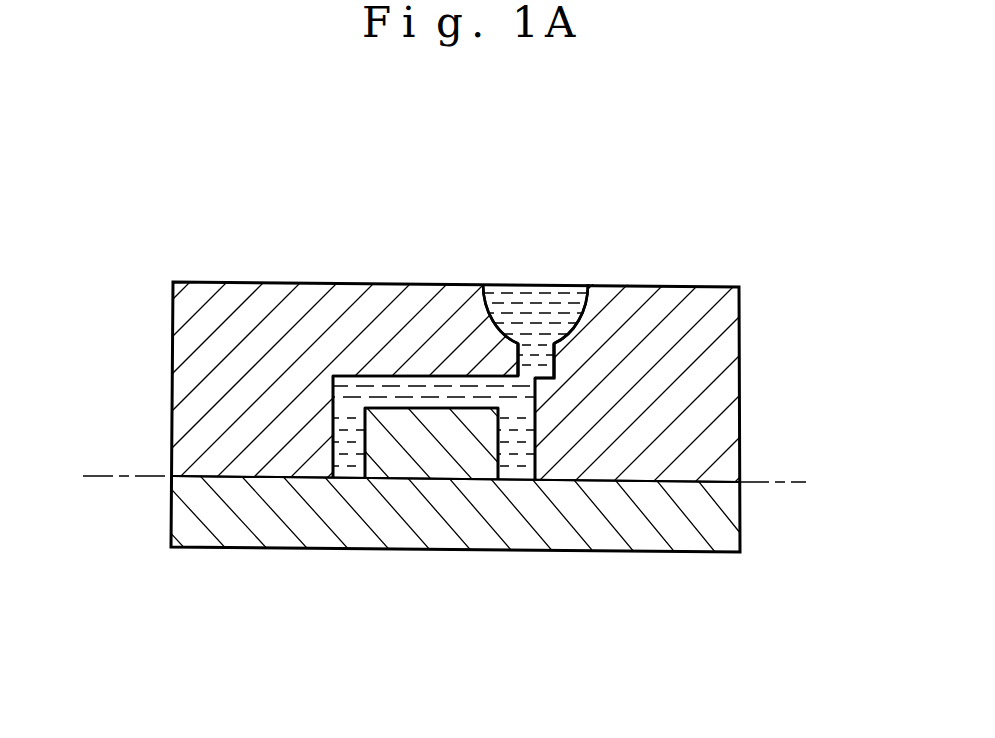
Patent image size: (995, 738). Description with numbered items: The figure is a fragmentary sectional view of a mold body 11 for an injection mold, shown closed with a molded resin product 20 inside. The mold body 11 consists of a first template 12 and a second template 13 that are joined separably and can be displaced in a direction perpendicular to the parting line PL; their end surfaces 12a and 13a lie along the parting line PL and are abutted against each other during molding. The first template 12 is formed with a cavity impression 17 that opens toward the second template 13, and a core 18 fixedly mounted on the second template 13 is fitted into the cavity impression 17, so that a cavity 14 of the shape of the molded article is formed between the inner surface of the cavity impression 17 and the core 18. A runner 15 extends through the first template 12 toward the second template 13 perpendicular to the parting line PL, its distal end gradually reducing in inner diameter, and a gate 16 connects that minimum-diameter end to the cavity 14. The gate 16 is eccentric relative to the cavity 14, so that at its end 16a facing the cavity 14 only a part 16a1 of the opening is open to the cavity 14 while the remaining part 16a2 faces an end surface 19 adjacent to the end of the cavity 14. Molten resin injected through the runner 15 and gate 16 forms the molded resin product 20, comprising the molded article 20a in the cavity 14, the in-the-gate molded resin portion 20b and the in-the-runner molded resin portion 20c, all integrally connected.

The mold body 11 is at (712, 283).
The first template 12 is at (703, 371).
The end surface 12a is at (627, 483).
The second template 13 is at (703, 533).
The end surface 13a is at (662, 481).
The cavity 14 is at (326, 391).
The runner 15 is at (569, 334).
The gate 16 is at (520, 310).
The end of the gate 16a is at (520, 380).
The part of the opening 16a1 is at (520, 310).
The remaining part of the opening 16a2 is at (551, 383).
The cavity impression 17 is at (386, 378).
The core 18 is at (360, 455).
The end surface 19 is at (536, 377).
The molded resin product 20 is at (560, 330).
The molded article 20a is at (352, 387).
The in-the-gate molded resin portion 20b is at (556, 385).
The in-the-runner molded resin portion 20c is at (554, 360).
The parting line PL is at (445, 480).